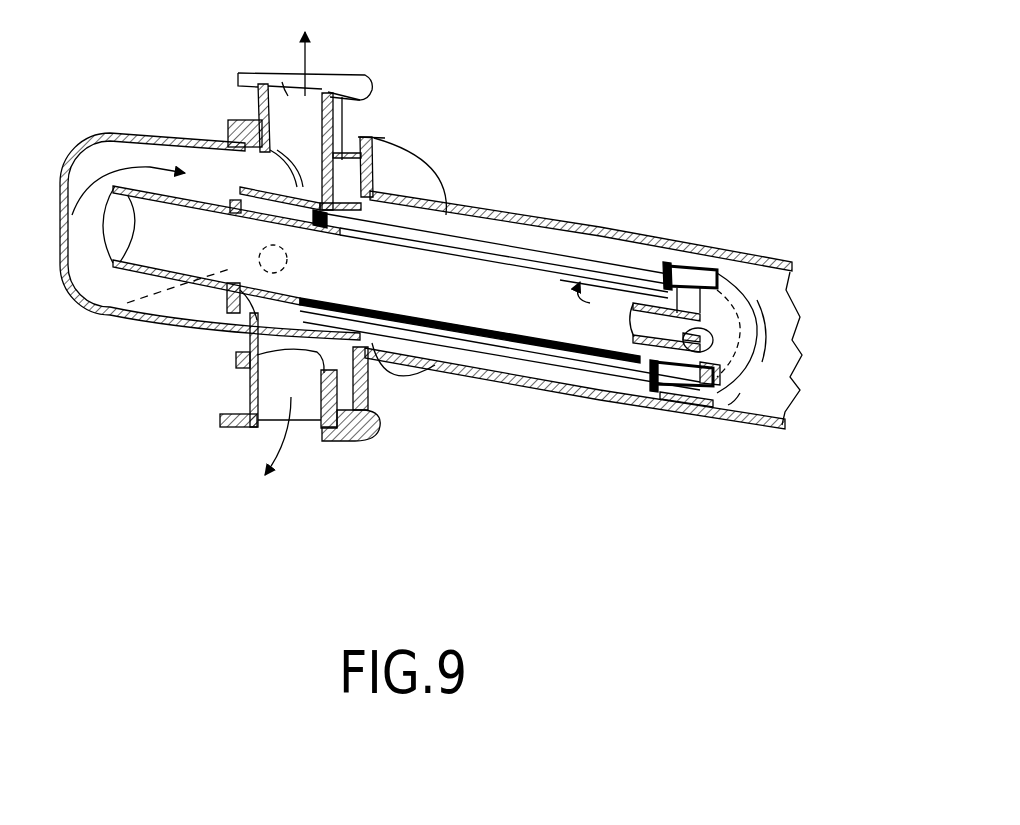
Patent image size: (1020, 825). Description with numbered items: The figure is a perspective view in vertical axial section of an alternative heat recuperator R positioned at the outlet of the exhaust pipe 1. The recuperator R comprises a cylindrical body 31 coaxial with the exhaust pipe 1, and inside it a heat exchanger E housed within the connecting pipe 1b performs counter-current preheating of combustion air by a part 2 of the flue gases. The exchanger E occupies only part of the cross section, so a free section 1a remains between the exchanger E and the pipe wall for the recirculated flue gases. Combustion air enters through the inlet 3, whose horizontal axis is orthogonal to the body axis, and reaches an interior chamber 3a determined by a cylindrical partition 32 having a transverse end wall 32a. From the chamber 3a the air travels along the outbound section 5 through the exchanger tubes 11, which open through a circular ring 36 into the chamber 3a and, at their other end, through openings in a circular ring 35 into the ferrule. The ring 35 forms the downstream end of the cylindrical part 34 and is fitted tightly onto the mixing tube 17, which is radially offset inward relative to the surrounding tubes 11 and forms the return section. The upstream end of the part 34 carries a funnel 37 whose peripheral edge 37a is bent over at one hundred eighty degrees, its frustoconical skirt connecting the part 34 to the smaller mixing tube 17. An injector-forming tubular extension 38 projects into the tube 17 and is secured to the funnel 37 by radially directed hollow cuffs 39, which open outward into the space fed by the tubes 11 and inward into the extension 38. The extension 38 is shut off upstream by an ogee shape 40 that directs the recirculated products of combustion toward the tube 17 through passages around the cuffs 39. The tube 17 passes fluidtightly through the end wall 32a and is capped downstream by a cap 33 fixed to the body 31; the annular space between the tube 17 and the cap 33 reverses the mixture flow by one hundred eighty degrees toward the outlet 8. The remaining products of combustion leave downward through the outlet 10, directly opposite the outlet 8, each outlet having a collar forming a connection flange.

The exhaust pipe 1 is at (748, 262).
The free section 1a is at (587, 363).
The connecting pipe 1b is at (480, 210).
The part of the flue gases 2 is at (549, 250).
The combustion air inlet 3 is at (120, 310).
The interior chamber 3a is at (260, 300).
The outbound section 5 is at (580, 276).
The outlet 8 is at (288, 97).
The outlet 10 is at (310, 410).
The exchanger tubes 11 is at (569, 253).
The mixing tube 17 is at (531, 352).
The cylindrical body 31 is at (347, 147).
The cylindrical partition 32 is at (243, 367).
The transverse end wall 32a is at (241, 200).
The cap 33 is at (83, 150).
The cylindrical part 34 is at (690, 258).
The circular ring 35 is at (620, 400).
The circular ring 36 is at (330, 213).
The funnel 37 is at (740, 325).
The upstream peripheral edge 37a is at (732, 393).
The tubular extension 38 is at (568, 370).
The hollow cuffs 39 is at (716, 312).
The ogee shape 40 is at (733, 350).
The heat exchanger E is at (463, 352).
The heat recuperator R is at (500, 108).